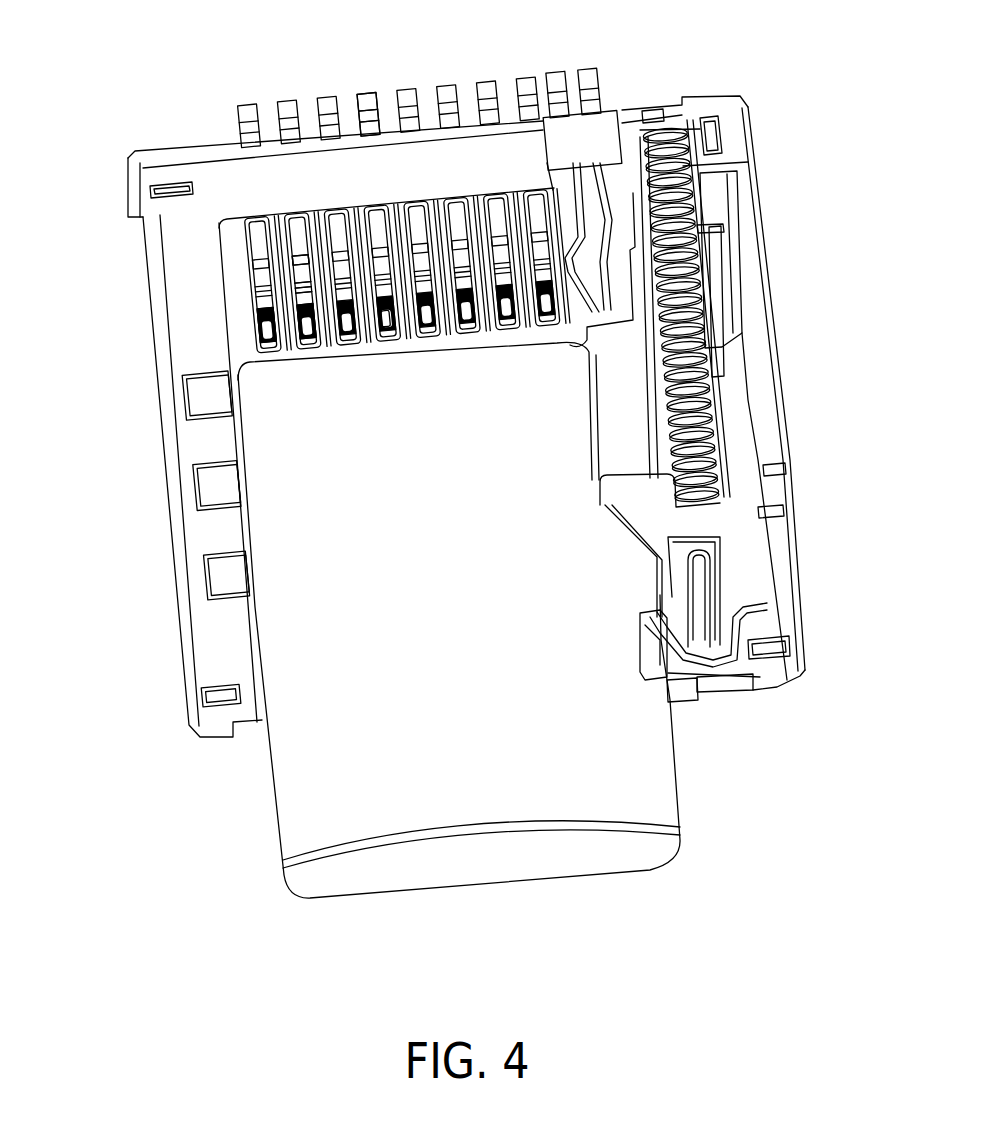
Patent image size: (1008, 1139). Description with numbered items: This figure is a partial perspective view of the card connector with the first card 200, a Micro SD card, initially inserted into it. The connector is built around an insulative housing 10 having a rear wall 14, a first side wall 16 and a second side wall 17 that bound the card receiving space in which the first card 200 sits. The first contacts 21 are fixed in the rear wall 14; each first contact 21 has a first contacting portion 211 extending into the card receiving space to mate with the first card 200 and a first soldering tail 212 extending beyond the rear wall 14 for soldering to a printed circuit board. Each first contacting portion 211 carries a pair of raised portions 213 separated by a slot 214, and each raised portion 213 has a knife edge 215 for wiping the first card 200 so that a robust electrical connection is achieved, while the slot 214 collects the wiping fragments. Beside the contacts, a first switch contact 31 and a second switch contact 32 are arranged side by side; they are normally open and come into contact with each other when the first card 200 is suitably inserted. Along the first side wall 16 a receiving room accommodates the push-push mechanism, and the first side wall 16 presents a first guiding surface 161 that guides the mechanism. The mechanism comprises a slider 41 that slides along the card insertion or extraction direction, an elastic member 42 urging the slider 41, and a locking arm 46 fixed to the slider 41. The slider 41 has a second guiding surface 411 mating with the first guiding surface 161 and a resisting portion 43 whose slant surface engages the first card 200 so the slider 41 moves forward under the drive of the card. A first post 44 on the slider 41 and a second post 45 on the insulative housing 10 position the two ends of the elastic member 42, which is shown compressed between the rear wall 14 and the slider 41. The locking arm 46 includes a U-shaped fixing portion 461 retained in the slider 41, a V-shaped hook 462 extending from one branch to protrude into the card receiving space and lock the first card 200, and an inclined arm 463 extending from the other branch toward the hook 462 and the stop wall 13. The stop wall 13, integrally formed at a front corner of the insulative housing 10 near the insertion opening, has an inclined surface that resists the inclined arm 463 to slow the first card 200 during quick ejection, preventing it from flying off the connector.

The insulative housing 10 is at (200, 265).
The stop wall 13 is at (713, 677).
The rear wall 14 is at (214, 180).
The first side wall 16 is at (743, 270).
The first guiding surface 161 is at (740, 307).
The second side wall 17 is at (210, 630).
The first contact 21 is at (297, 360).
The first contacting portion 211 is at (375, 345).
The first soldering tail 212 is at (367, 100).
The raised portion 213 is at (300, 345).
The slot 214 is at (298, 330).
The knife edge 215 is at (297, 312).
The first switch contact 31 is at (583, 80).
The second switch contact 32 is at (557, 88).
The slider 41 is at (733, 483).
The second guiding surface 411 is at (747, 370).
The elastic member 42 is at (687, 233).
The resisting portion 43 is at (645, 503).
The first post 44 is at (727, 457).
The second post 45 is at (687, 170).
The locking arm 46 is at (723, 597).
The U-shaped fixing portion 461 is at (720, 547).
The hook 462 is at (670, 683).
The inclined arm 463 is at (760, 680).
The first card 200 is at (325, 814).